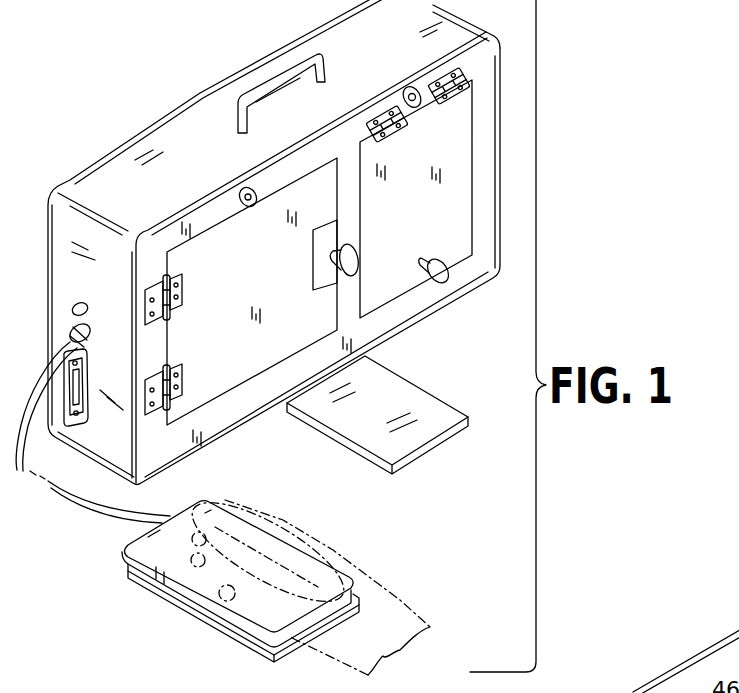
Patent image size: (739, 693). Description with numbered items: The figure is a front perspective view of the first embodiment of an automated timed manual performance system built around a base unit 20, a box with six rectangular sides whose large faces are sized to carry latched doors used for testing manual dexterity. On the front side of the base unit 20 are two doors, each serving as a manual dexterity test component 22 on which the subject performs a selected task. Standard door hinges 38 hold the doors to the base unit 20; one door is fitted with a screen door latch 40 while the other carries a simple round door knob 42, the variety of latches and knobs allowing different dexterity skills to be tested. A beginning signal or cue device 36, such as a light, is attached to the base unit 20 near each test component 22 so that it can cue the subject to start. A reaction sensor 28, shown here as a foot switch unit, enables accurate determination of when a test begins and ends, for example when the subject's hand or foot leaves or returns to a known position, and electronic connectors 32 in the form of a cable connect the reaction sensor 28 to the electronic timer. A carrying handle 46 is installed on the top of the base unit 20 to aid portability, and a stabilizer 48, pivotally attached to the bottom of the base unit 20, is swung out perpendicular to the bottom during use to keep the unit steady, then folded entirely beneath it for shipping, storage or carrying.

The base unit 20 is at (124, 131).
The manual dexterity test component 22 is at (403, 295).
The reaction sensor 28 is at (224, 497).
The electronic connectors 32 is at (93, 508).
The beginning signal or cue device 36 is at (413, 86).
The door hinges 38 is at (438, 106).
The screen door latch 40 is at (360, 262).
The round door knob 42 is at (442, 260).
The carrying handle 46 is at (324, 68).
The stabilizer 48 is at (446, 413).